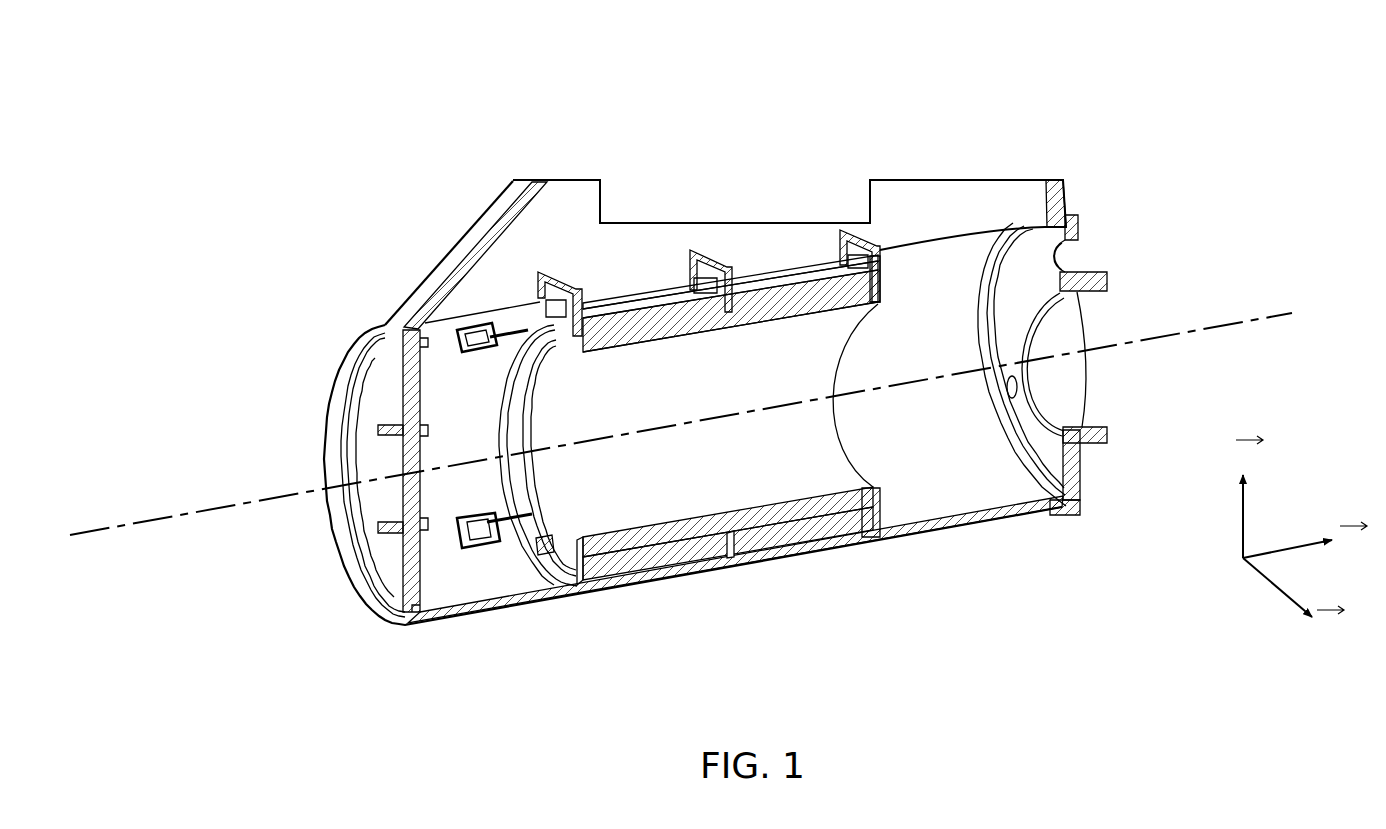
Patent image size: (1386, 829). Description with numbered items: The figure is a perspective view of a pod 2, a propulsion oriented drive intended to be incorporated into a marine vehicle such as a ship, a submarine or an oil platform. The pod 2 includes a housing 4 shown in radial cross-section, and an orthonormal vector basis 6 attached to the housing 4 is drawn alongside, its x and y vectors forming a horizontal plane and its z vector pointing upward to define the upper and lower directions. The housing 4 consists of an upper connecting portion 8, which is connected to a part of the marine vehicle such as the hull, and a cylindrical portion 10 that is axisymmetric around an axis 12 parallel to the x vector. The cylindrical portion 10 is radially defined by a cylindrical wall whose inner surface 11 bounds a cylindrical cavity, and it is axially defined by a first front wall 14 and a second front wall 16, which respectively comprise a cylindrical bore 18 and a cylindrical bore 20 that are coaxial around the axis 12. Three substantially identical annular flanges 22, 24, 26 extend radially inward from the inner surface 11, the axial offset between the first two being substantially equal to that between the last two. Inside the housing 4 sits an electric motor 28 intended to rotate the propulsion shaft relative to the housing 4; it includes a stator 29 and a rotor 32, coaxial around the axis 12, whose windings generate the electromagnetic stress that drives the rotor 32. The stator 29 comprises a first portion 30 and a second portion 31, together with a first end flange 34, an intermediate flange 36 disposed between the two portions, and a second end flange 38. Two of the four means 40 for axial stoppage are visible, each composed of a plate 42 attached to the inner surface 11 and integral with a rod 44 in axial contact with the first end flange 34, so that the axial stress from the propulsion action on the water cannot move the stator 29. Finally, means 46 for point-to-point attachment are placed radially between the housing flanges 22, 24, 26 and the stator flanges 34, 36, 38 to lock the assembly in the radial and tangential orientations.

The pod 2 is at (1226, 92).
The housing 4 is at (457, 213).
The orthonormal vector basis 6 is at (1233, 563).
The upper connecting portion 8 is at (441, 248).
The cylindrical portion 10 is at (457, 622).
The inner surface 11 is at (1012, 484).
The axis 12 is at (152, 518).
The first front wall 14 is at (362, 588).
The second front wall 16 is at (1086, 472).
The cylindrical bore 18 is at (344, 522).
The cylindrical bore 20 is at (1086, 398).
The annular flange 22 is at (500, 265).
The annular flange 24 is at (733, 548).
The annular flange 26 is at (880, 538).
The electric motor 28 is at (868, 450).
The stator 29 is at (778, 556).
The first portion 30 is at (615, 600).
The second portion 31 is at (812, 552).
The rotor 32 is at (660, 545).
The first end flange 34 is at (536, 275).
The intermediate flange 36 is at (750, 300).
The second end flange 38 is at (904, 262).
The means for axial stoppage 40 is at (474, 362).
The plate 42 is at (484, 562).
The rod 44 is at (542, 568).
The means for point-to-point attachment 46 is at (560, 303).